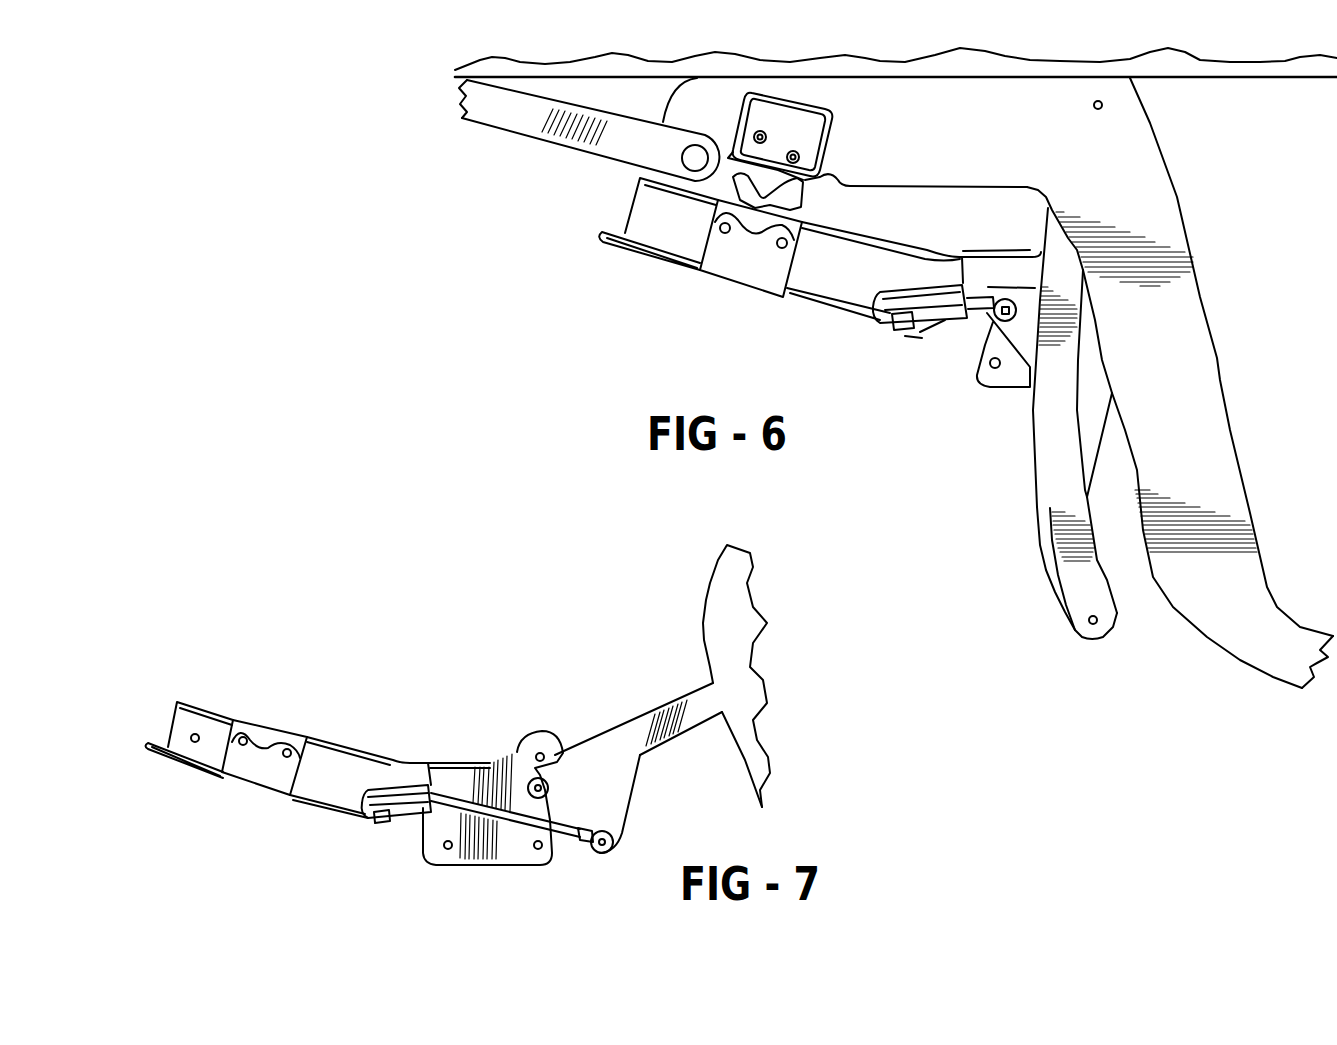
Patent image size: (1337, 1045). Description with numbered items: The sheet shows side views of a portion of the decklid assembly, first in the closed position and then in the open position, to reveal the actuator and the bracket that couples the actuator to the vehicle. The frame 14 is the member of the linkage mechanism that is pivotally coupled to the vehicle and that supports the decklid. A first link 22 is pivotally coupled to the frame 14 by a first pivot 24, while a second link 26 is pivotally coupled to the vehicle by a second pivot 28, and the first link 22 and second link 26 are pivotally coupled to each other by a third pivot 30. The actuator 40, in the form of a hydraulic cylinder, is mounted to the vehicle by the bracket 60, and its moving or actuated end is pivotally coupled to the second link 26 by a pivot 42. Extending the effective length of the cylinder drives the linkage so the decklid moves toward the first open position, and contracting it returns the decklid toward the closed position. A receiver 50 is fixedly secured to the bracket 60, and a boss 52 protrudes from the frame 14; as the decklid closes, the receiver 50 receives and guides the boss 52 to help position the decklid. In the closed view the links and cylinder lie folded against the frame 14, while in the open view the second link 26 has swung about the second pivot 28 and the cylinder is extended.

In FIG. 6, the frame 14 is at (1208, 366).
In FIG. 6, the first link 22 is at (1047, 440).
In FIG. 6, the first pivot 24 is at (1102, 109).
In FIG. 6, the second link 26 is at (1040, 547).
In FIG. 7, the second link 26 is at (617, 747).
In FIG. 7, the second pivot 28 is at (520, 750).
In FIG. 6, the third pivot 30 is at (1093, 625).
In FIG. 6, the actuator 40 is at (913, 328).
In FIG. 7, the actuator 40 is at (410, 821).
In FIG. 6, the pivot 42 is at (997, 317).
In FIG. 7, the pivot 42 is at (603, 853).
In FIG. 6, the receiver 50 is at (740, 270).
In FIG. 7, the receiver 50 is at (267, 777).
In FIG. 6, the boss 52 is at (805, 187).
In FIG. 6, the bracket 60 is at (603, 233).
In FIG. 7, the bracket 60 is at (173, 760).